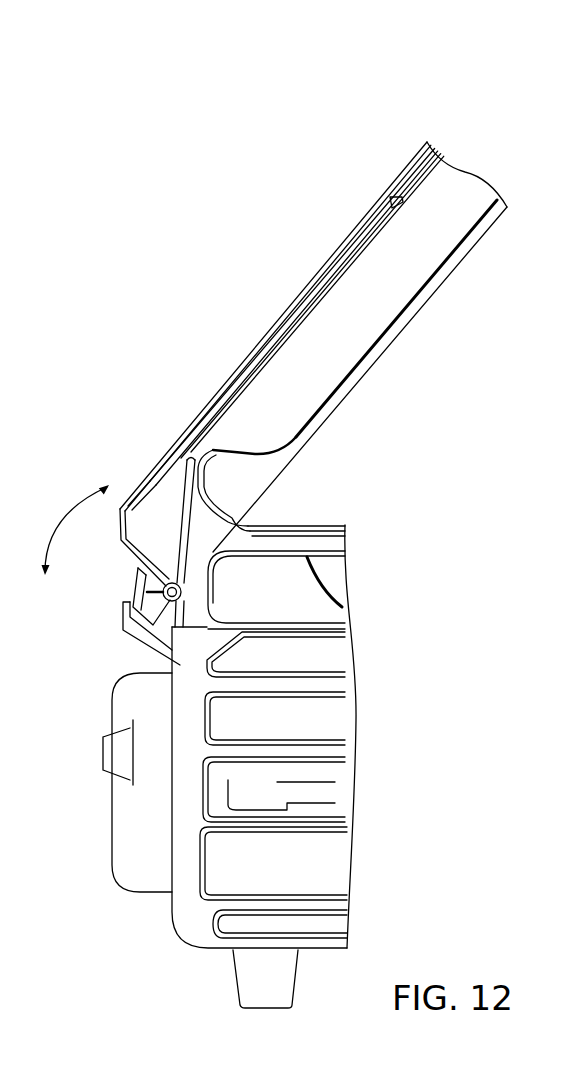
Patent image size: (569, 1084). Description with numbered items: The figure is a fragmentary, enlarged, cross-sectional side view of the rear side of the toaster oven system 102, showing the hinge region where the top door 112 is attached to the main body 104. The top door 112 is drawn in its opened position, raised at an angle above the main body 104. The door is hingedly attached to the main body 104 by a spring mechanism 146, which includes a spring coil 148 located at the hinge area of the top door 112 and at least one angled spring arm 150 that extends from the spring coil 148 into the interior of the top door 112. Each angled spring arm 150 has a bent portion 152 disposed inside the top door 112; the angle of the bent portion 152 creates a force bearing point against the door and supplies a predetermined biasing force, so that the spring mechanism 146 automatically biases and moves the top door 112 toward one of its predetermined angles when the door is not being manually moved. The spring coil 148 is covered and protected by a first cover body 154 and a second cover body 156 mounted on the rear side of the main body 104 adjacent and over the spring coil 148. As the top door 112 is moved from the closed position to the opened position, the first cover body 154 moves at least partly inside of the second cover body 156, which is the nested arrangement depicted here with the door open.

The toaster oven system 102 is at (265, 770).
The main body 104 is at (340, 577).
The top door 112 is at (375, 205).
The spring mechanism 146 is at (315, 602).
The spring coil 148 is at (181, 597).
The angled spring arm 150 is at (182, 490).
The bent portion 152 is at (198, 482).
The first cover body 154 is at (130, 589).
The second cover body 156 is at (125, 618).